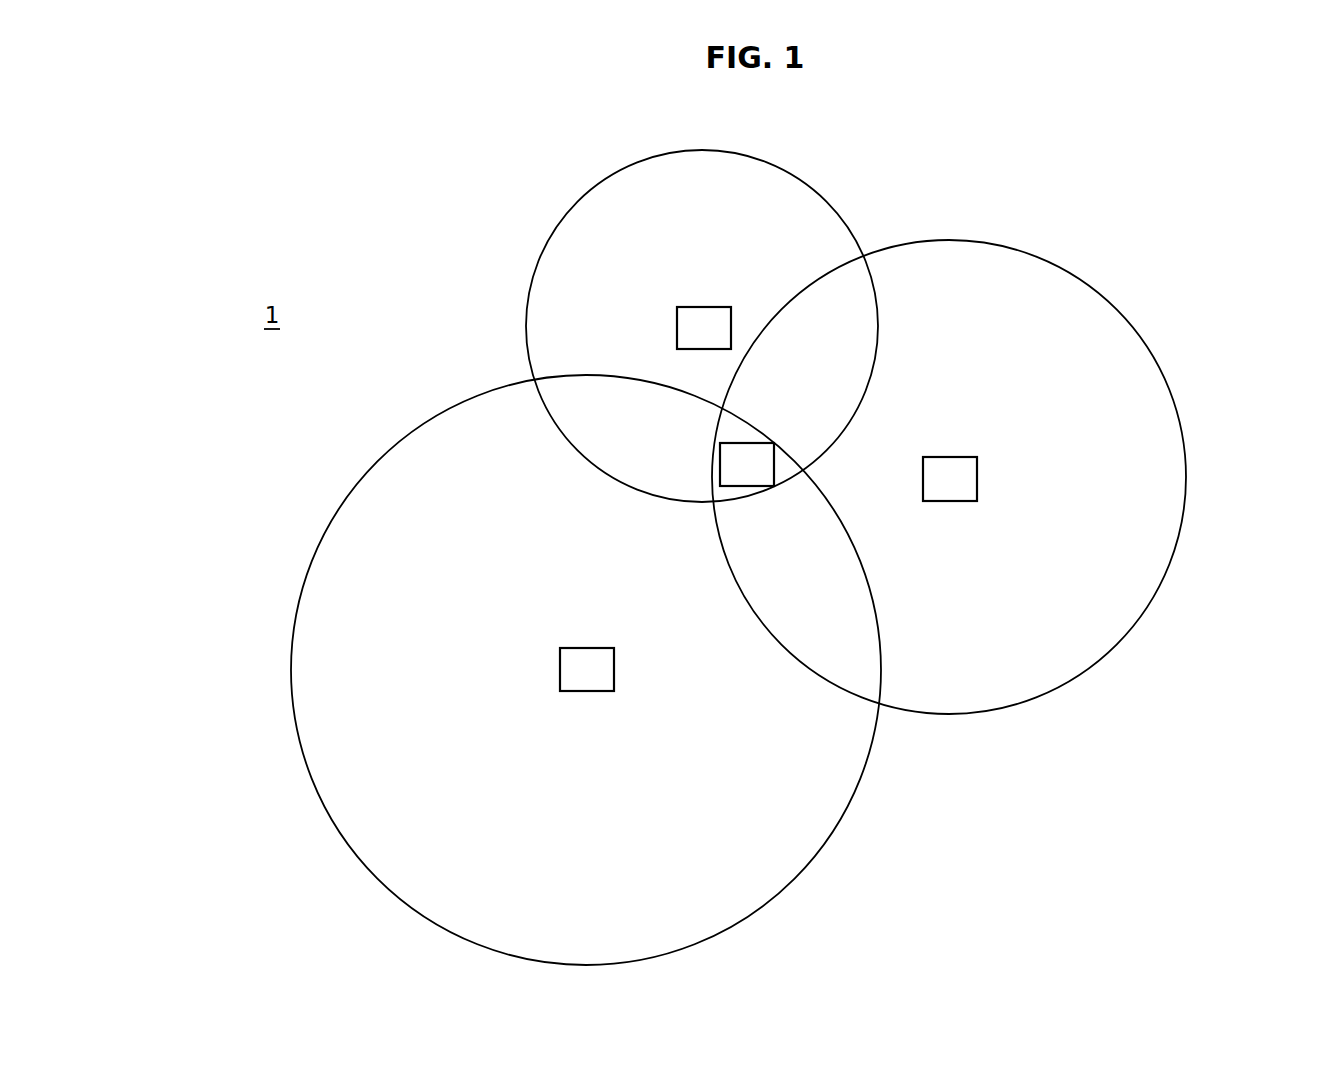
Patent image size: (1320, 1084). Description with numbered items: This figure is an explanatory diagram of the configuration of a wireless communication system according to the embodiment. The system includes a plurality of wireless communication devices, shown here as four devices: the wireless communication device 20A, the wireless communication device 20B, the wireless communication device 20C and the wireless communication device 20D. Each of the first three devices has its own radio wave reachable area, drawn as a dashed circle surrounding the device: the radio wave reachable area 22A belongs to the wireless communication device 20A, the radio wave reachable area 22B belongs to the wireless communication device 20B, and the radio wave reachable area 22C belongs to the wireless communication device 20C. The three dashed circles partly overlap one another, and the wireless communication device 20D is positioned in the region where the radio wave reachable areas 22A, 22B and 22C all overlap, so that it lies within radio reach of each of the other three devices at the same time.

The wireless communication device 20A is at (586, 648).
The wireless communication device 20B is at (948, 457).
The wireless communication device 20C is at (703, 307).
The wireless communication device 20D is at (746, 443).
The radio wave reachable area 22A is at (292, 664).
The radio wave reachable area 22B is at (1187, 468).
The radio wave reachable area 22C is at (700, 151).